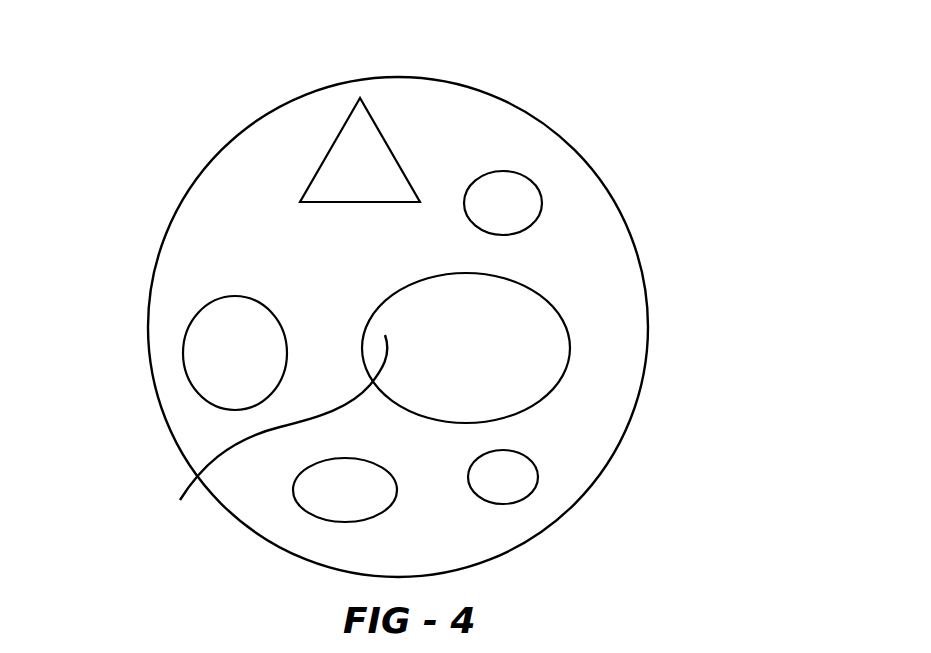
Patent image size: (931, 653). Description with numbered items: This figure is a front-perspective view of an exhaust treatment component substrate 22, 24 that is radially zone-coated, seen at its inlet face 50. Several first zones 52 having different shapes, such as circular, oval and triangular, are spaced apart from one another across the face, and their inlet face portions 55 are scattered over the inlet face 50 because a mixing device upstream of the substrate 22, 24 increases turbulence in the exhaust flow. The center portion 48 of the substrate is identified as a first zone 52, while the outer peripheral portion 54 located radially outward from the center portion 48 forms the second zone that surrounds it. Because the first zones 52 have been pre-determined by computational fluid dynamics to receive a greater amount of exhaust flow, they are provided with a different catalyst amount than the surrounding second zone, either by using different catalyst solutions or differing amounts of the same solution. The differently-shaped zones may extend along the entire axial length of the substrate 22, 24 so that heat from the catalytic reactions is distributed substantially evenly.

The exhaust treatment component substrate 22 is at (700, 113).
The exhaust treatment component substrate 24 is at (678, 162).
The center portion 48 is at (272, 439).
The inlet face 50 is at (597, 493).
The first zone 52 is at (369, 182).
The outer peripheral portion 54 is at (468, 123).
The inlet face portions 55 is at (370, 140).